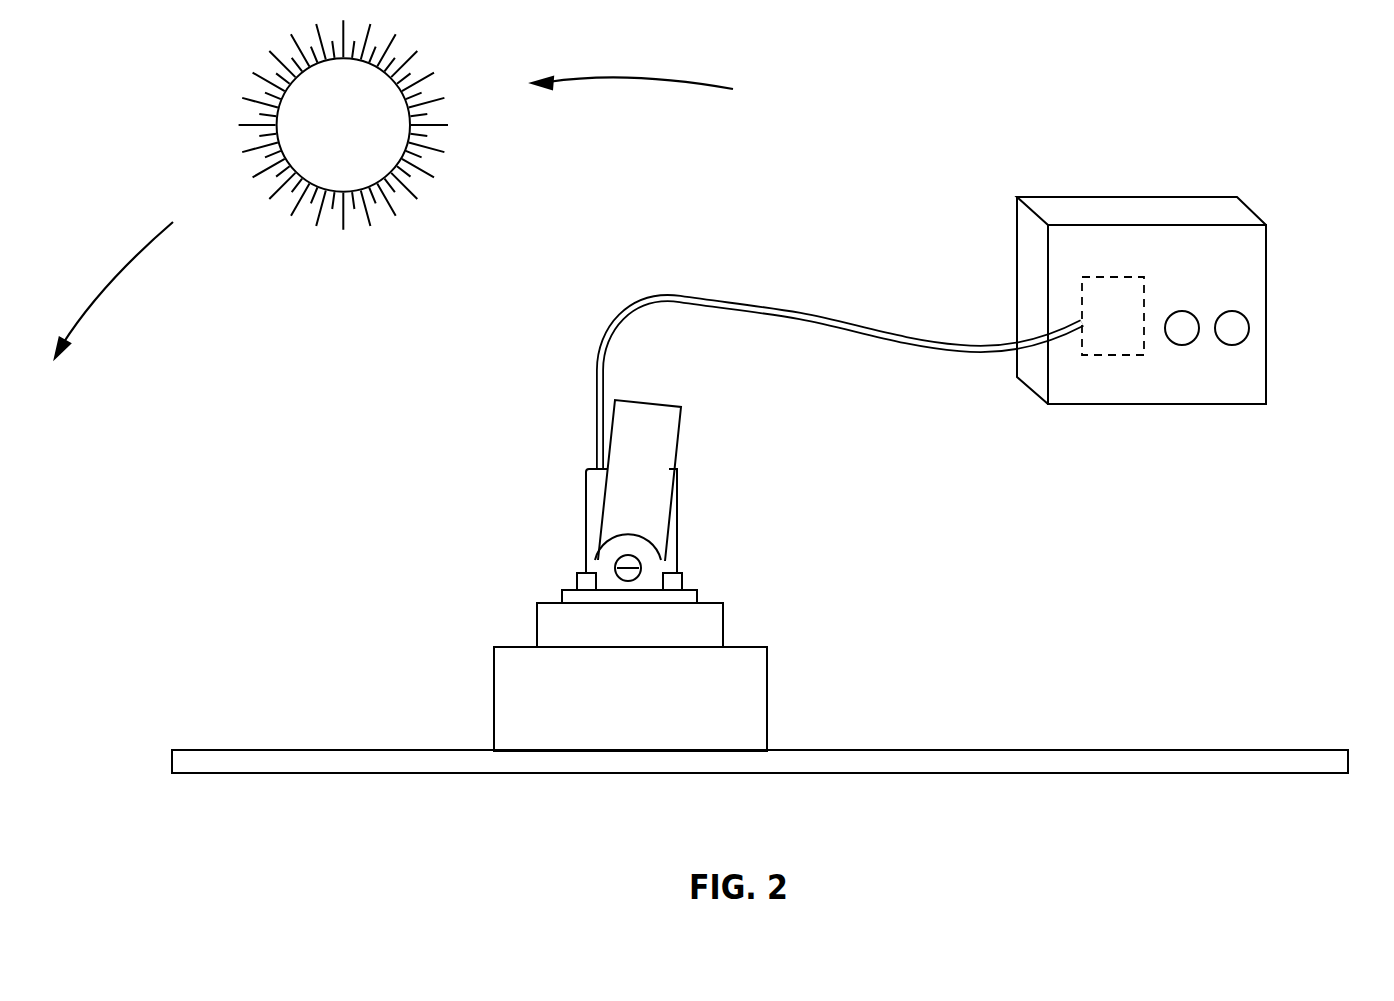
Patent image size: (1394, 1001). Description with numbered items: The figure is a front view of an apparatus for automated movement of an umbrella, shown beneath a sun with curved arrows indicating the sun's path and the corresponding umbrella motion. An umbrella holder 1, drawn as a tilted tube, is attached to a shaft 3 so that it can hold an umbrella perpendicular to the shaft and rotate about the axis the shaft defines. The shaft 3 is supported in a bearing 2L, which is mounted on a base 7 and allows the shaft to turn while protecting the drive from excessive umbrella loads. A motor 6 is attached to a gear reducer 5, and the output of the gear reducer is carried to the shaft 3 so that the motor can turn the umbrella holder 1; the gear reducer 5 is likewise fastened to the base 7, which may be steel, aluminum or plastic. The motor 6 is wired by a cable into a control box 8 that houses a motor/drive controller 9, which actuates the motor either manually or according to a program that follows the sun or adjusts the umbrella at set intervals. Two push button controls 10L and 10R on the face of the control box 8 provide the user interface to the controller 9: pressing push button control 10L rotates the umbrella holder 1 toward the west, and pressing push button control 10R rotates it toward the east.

The umbrella holder 1 is at (680, 428).
The bearing 2L is at (647, 570).
The shaft 3 is at (613, 567).
The gear reducer 5 is at (677, 517).
The motor 6 is at (586, 517).
The base 7 is at (752, 703).
The control box 8 is at (1266, 256).
The motor/drive controller 9 is at (1120, 345).
The push button control 10L is at (1183, 333).
The push button control 10R is at (1249, 332).